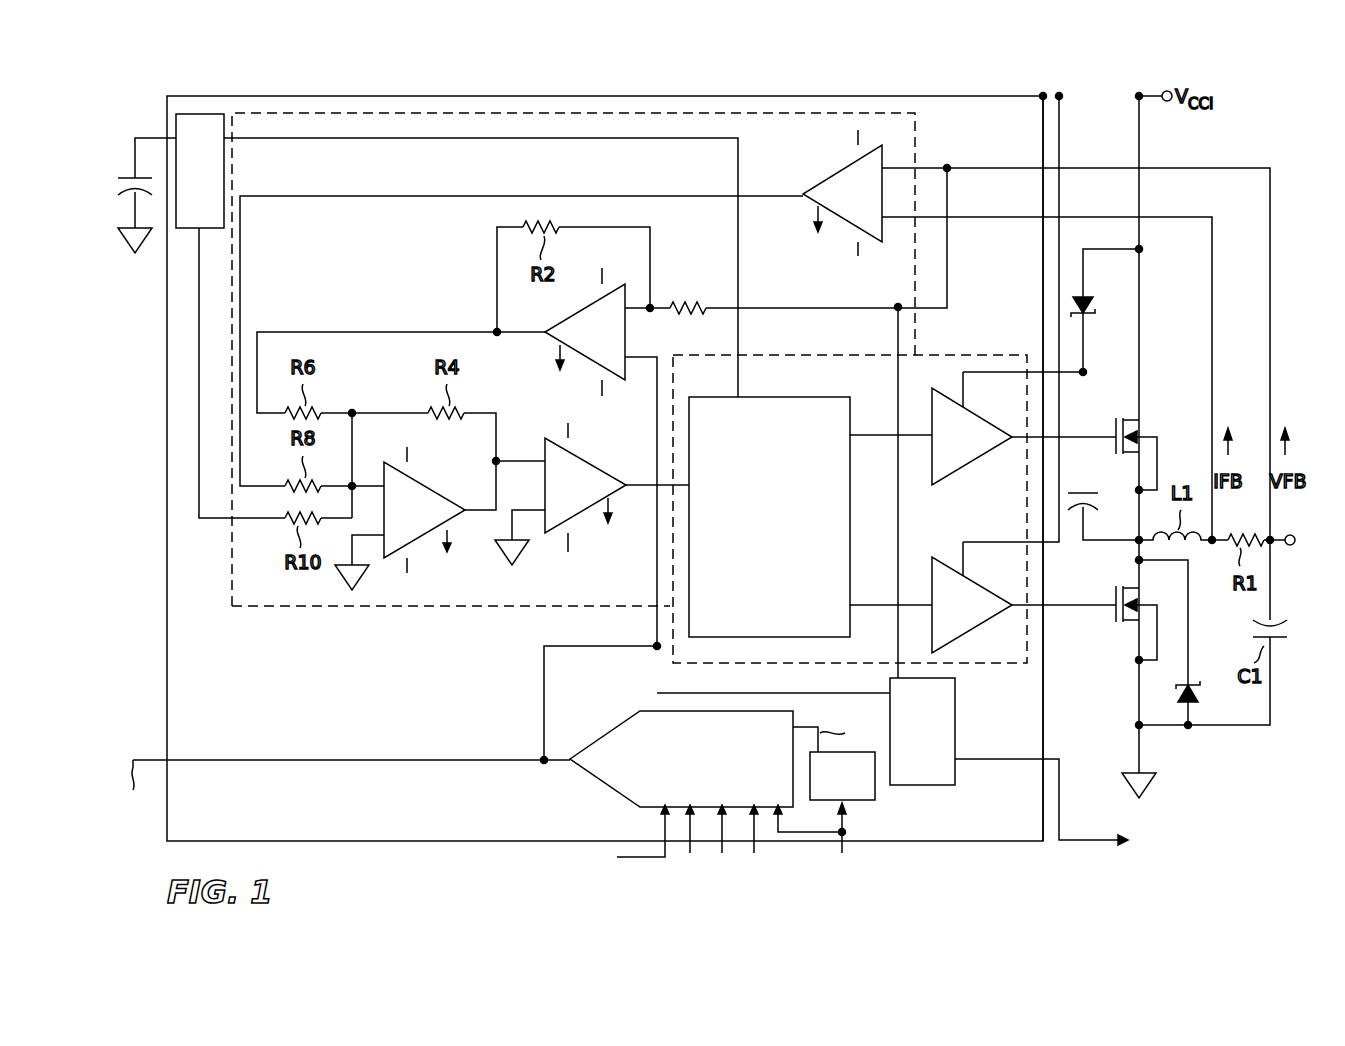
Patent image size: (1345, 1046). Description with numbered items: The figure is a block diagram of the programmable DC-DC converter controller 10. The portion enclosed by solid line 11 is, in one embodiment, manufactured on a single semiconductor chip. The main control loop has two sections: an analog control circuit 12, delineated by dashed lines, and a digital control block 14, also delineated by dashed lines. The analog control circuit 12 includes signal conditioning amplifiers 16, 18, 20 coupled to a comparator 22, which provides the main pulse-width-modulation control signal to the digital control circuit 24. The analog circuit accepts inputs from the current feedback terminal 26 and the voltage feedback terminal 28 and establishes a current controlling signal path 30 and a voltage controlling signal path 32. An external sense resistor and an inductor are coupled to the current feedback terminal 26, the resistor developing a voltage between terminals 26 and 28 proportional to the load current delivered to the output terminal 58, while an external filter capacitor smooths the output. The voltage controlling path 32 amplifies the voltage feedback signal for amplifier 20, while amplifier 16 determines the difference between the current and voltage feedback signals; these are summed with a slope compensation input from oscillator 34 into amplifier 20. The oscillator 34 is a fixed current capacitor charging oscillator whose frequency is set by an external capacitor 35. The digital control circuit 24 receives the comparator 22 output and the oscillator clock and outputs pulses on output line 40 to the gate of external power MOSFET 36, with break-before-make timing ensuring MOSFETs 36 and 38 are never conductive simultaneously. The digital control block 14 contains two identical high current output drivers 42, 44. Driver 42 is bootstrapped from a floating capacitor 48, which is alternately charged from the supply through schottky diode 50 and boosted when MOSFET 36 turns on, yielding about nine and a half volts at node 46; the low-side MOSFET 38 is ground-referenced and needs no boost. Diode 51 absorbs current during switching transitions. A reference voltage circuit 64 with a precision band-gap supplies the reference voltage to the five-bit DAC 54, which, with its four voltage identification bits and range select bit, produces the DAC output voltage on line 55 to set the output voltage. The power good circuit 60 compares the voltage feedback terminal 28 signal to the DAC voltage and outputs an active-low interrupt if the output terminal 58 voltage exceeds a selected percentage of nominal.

The programmable DC-DC converter controller 10 is at (963, 852).
The solid line 11 is at (950, 97).
The analog control circuit 12 is at (772, 114).
The digital control block 14 is at (996, 354).
The signal conditioning amplifier 16 is at (840, 203).
The signal conditioning amplifier 18 is at (582, 341).
The signal conditioning amplifier 20 is at (405, 520).
The comparator 22 is at (567, 495).
The digital control circuit 24 is at (797, 397).
The IFB terminal 26 is at (1212, 548).
The VFB terminal 28 is at (1276, 533).
The current controlling signal path 30 is at (300, 198).
The voltage controlling signal path 32 is at (770, 306).
The oscillator 34 is at (190, 208).
The external capacitor 35 is at (135, 178).
The external power MOSFET 36 is at (1148, 423).
The external power MOSFET 38 is at (1138, 630).
The output line 40 is at (872, 434).
The high current output driver 42 is at (953, 447).
The high current output driver 44 is at (953, 615).
The node 46 is at (1012, 382).
The floating capacitor 48 is at (1088, 490).
The schottky diode 50 is at (1090, 296).
The diode 51 is at (1200, 700).
The 5-bit DAC 54 is at (626, 711).
The line 55 is at (472, 762).
The VOUT 58 is at (1291, 548).
The power good circuit 60 is at (960, 688).
The reference voltage circuit 64 is at (878, 795).